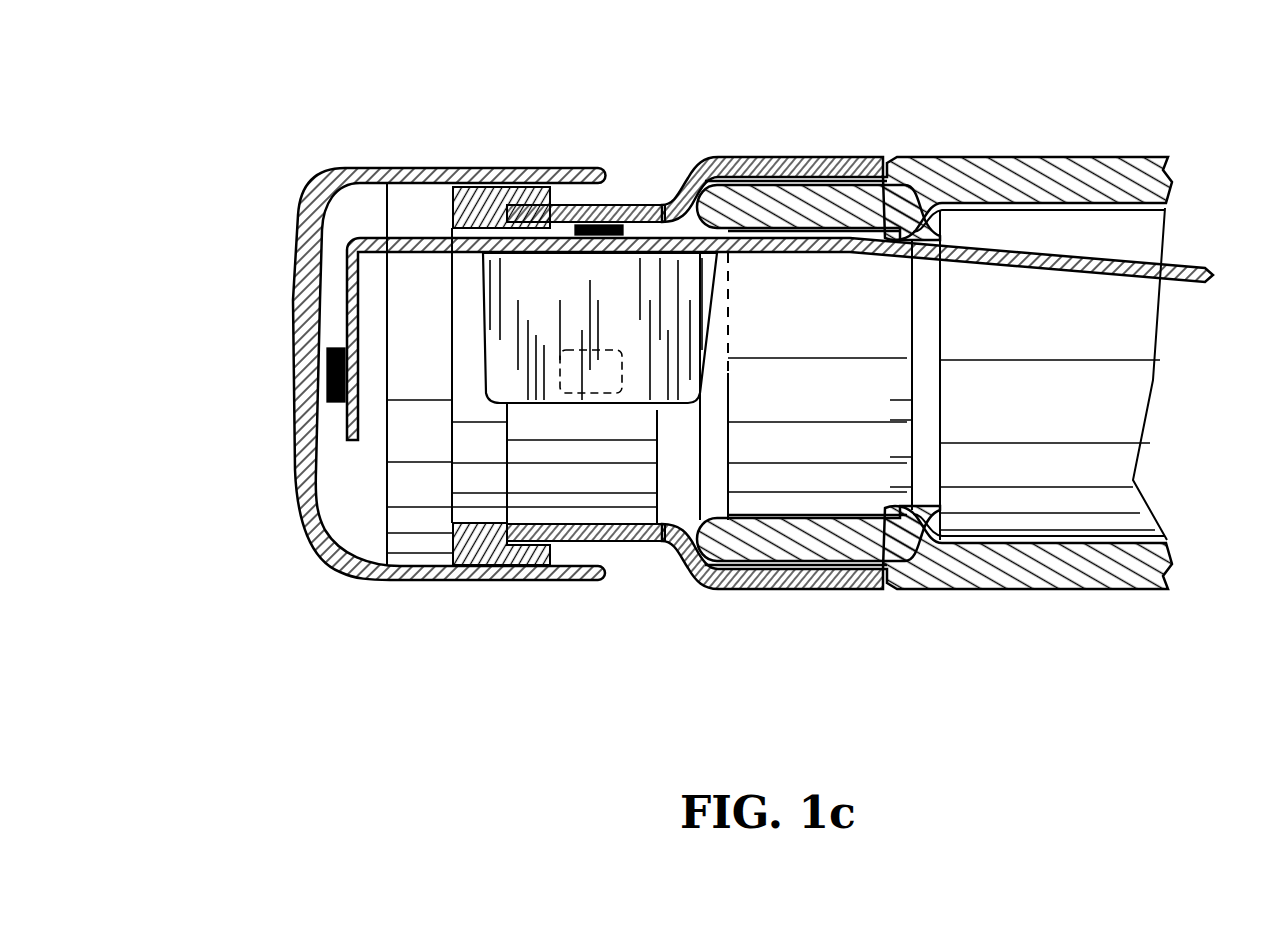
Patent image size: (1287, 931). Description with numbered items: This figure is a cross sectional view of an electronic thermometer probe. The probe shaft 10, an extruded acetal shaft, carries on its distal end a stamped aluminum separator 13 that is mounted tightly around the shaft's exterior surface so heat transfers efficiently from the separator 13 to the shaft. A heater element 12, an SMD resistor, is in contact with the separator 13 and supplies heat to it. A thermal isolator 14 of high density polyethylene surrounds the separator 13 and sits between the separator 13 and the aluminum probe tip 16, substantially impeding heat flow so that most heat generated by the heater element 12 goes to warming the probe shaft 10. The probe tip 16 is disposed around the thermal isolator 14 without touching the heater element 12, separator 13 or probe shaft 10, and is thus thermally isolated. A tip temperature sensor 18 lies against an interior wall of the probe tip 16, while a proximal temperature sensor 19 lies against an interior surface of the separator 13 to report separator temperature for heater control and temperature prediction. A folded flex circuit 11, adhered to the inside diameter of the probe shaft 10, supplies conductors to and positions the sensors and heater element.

The probe shaft 10 is at (1095, 158).
The flex circuit 11 is at (688, 297).
The heater element 12 is at (618, 200).
The separator 13 is at (865, 158).
The thermal isolator 14 is at (480, 168).
The probe tip 16 is at (320, 563).
The tip temperature sensor 18 is at (330, 373).
The proximal temperature sensor 19 is at (590, 388).